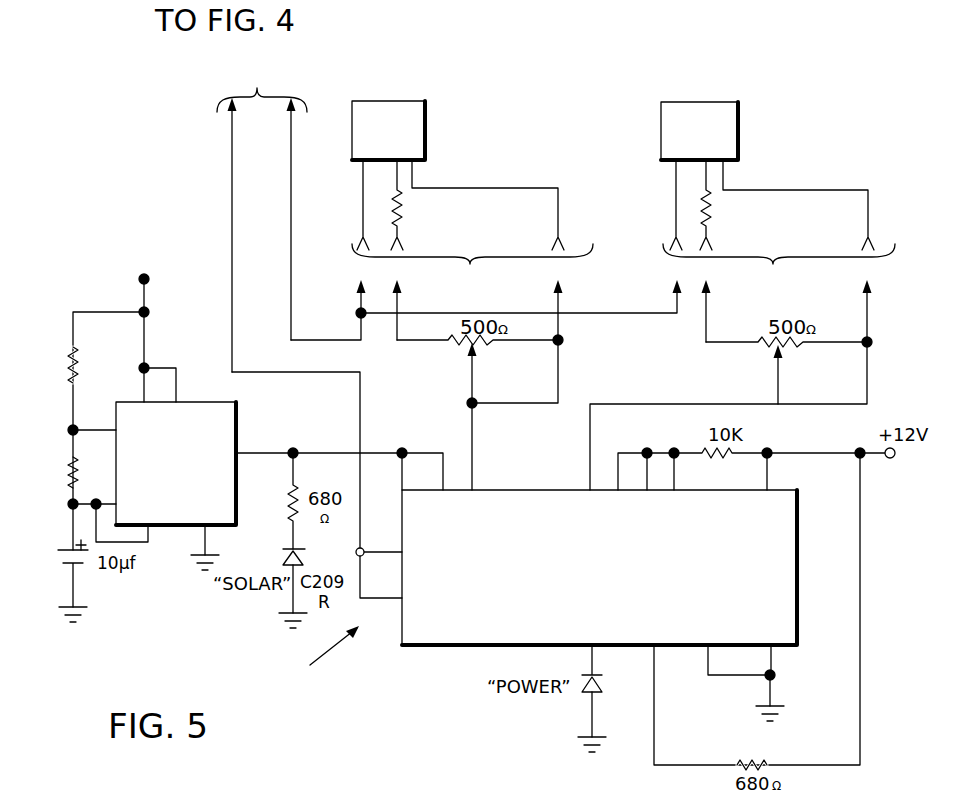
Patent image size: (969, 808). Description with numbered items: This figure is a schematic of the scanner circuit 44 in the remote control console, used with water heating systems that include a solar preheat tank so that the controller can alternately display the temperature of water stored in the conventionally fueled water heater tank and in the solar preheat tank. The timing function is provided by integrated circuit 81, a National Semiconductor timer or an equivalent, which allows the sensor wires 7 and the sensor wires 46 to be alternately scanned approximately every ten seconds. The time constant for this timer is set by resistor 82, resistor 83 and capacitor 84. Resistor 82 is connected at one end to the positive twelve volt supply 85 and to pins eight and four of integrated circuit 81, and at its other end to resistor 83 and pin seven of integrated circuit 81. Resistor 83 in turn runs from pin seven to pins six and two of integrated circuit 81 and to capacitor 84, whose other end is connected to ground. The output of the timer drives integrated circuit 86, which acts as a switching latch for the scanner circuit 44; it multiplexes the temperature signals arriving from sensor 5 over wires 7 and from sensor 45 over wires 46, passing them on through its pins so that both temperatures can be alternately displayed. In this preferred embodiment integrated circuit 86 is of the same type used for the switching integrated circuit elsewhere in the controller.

The sensor 5 is at (428, 114).
The sensor 45 is at (749, 107).
The sensor wires 7 is at (472, 267).
The sensor wires 46 is at (779, 266).
The integrated circuit 81 is at (182, 500).
The resistor 82 is at (77, 353).
The resistor 83 is at (70, 479).
The capacitor 84 is at (62, 550).
The +12 V supply 85 is at (150, 279).
The integrated circuit 86 is at (590, 603).
The scanner circuit 44 is at (312, 656).